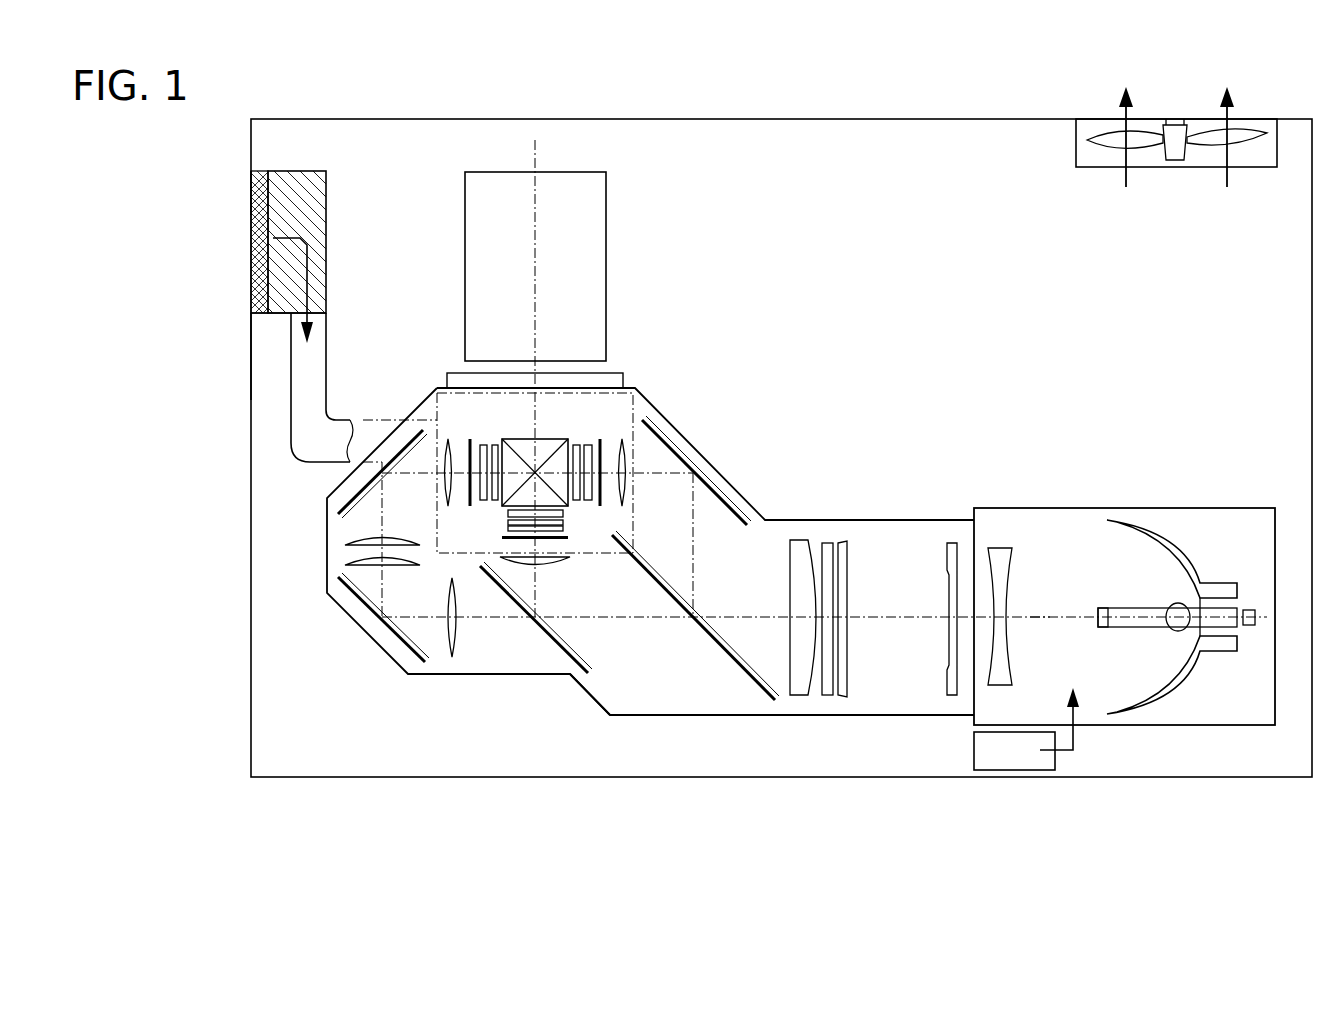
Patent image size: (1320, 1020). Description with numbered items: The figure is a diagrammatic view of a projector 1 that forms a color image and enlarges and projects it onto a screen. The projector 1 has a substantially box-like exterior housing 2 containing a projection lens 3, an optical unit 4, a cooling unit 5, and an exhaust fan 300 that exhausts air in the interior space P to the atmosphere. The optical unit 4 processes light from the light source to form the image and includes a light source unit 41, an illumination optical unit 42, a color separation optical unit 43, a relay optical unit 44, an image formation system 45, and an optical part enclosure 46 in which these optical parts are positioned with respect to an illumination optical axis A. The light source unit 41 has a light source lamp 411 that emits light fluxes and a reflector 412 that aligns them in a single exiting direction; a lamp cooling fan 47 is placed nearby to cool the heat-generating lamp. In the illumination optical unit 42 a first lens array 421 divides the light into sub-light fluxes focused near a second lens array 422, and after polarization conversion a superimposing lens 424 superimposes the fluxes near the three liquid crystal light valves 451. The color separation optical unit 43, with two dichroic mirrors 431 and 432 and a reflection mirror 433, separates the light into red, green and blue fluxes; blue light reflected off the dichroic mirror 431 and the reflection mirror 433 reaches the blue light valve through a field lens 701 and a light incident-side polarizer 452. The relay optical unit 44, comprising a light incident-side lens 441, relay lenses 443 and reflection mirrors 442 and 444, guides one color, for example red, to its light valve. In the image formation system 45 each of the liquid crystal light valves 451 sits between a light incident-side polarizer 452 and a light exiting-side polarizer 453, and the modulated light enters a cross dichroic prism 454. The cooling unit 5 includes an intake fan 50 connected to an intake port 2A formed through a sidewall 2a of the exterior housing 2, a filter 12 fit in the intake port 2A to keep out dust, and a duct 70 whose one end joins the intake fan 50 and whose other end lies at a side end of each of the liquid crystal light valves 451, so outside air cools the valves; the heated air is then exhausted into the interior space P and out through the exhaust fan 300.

The projector 1 is at (782, 108).
The exterior housing 2 is at (628, 118).
The intake port 2A is at (249, 192).
The sidewall 2a is at (252, 328).
The filter 12 is at (258, 170).
The intake fan 50 is at (335, 184).
The duct 70 is at (310, 352).
The projection lens 3 is at (596, 229).
The optical unit 4 is at (782, 505).
The cooling unit 5 is at (454, 350).
The light source unit 41 is at (1124, 680).
The light source lamp 411 is at (1112, 628).
The reflector 412 is at (1157, 683).
The illumination optical unit 42 is at (827, 685).
The first lens array 421 is at (945, 673).
The second lens array 422 is at (848, 683).
The superimposing lens 424 is at (790, 580).
The color separation optical unit 43 is at (656, 593).
The dichroic mirror 431 is at (715, 660).
The dichroic mirror 432 is at (573, 655).
The reflection mirror 433 is at (728, 507).
The relay optical unit 44 is at (356, 551).
The light incident-side lens 441 is at (450, 652).
The reflection mirror 442 is at (350, 592).
The relay lenses 443 is at (343, 562).
The reflection mirror 444 is at (392, 458).
The image formation system 45 is at (443, 570).
The liquid crystal light valves 451 is at (490, 618).
The light incident-side polarizer 452 is at (468, 443).
The light exiting-side polarizer 453 is at (494, 444).
The cross dichroic prism 454 is at (545, 445).
The optical part enclosure 46 is at (583, 690).
The lamp cooling fan 47 is at (1020, 765).
The exhaust fan 300 is at (1250, 165).
The field lens 701 is at (442, 488).
The illumination optical axis A is at (1040, 616).
The interior space P is at (913, 389).